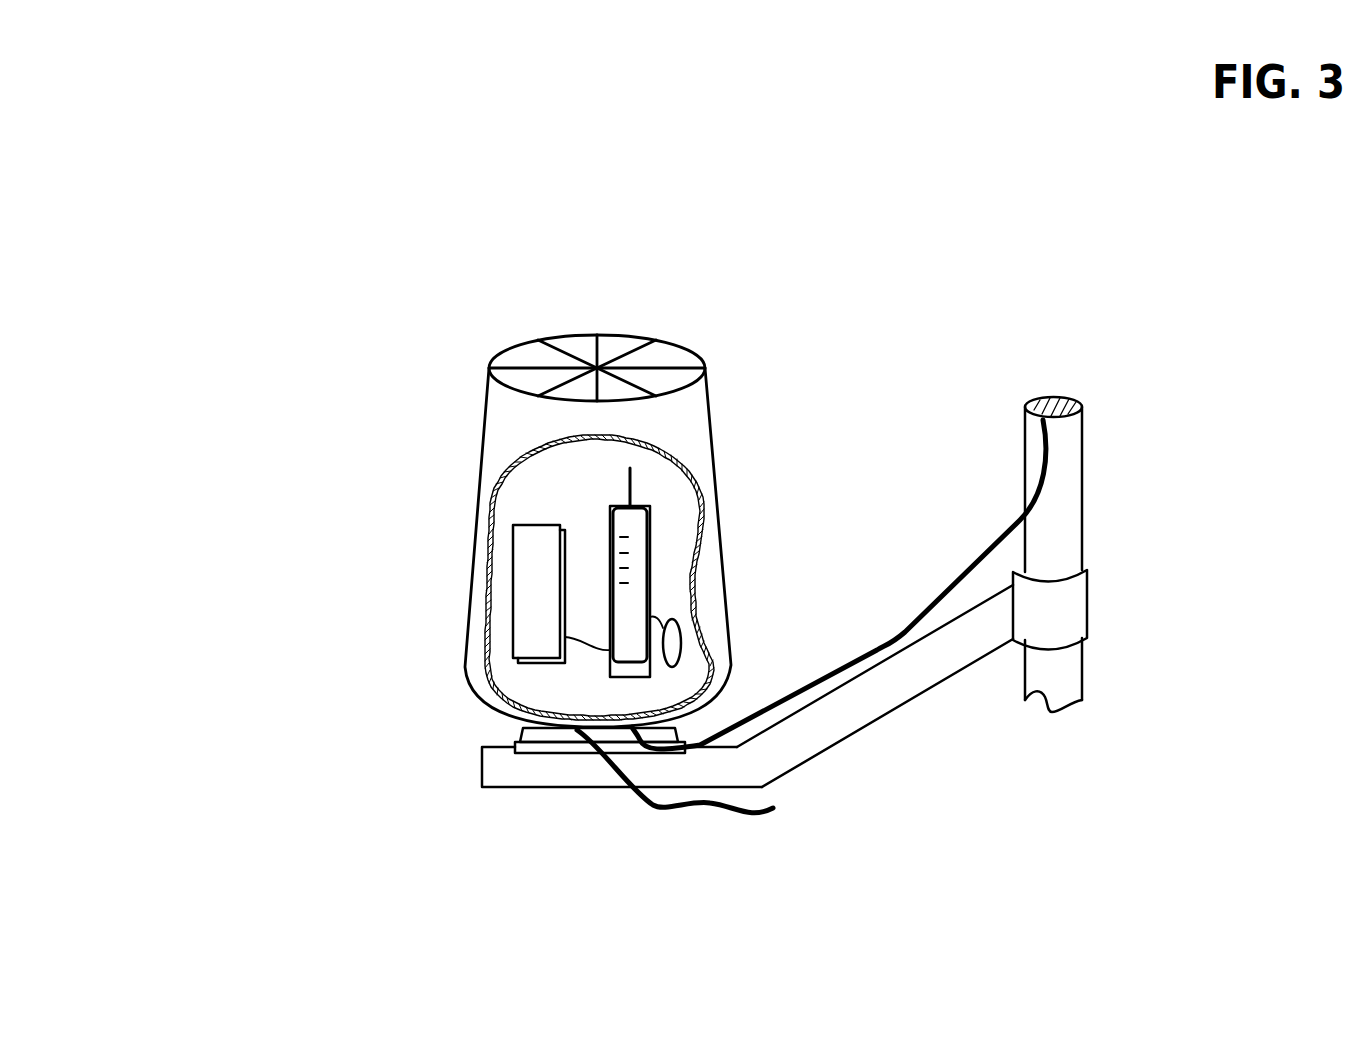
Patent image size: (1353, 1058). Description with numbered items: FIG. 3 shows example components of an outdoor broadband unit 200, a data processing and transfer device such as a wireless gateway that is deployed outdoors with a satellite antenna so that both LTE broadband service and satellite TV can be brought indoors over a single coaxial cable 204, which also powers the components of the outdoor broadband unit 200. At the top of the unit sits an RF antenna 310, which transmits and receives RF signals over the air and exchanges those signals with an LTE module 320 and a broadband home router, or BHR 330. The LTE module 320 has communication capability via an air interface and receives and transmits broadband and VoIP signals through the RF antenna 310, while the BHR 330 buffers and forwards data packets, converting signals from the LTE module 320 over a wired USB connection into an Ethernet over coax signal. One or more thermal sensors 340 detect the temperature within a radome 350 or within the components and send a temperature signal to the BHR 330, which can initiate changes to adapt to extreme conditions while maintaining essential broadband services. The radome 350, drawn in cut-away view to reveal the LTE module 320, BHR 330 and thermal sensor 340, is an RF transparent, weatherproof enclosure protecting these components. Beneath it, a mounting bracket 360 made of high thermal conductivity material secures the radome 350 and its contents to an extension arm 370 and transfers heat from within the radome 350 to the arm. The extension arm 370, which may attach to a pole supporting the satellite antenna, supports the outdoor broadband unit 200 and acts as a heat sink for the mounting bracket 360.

The outdoor broadband unit 200 is at (182, 83).
The coaxial cable 204 is at (653, 805).
The RF antenna 310 is at (638, 350).
The LTE module 320 is at (510, 590).
The broadband home router (BHR) 330 is at (650, 512).
The thermal sensor 340 is at (681, 643).
The radome 350 is at (493, 412).
The mounting bracket 360 is at (507, 733).
The extension arm 370 is at (947, 677).